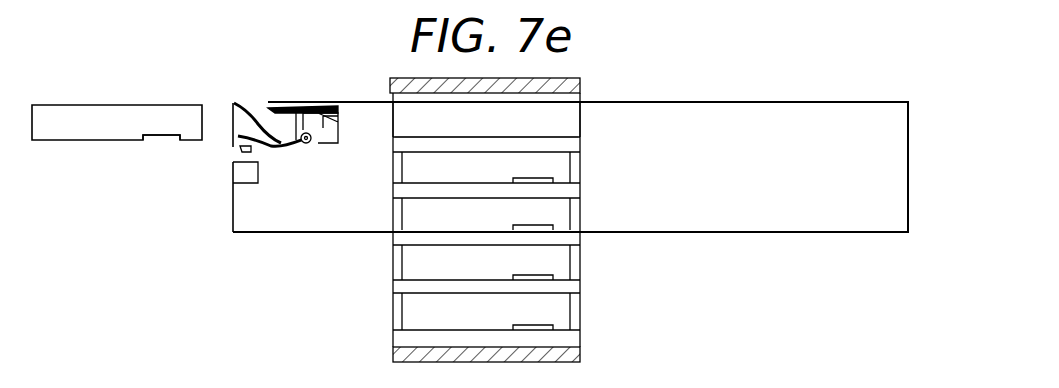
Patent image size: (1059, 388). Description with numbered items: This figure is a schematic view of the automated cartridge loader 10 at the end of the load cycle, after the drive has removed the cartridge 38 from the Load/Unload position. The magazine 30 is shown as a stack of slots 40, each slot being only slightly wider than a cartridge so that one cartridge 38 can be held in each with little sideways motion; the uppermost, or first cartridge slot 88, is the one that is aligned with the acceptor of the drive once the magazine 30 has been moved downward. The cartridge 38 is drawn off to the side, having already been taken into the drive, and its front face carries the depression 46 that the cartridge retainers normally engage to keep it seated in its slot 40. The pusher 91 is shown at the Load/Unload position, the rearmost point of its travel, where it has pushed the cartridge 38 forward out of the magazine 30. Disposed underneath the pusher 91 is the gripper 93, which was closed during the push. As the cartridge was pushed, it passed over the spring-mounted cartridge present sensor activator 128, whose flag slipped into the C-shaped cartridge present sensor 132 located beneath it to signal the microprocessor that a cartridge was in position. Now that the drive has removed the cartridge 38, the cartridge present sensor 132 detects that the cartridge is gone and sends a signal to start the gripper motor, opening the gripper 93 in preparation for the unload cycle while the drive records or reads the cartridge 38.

The automated cartridge loader 10 is at (741, 102).
The magazine 30 is at (392, 78).
The cartridge 38 is at (110, 113).
The slots 40 is at (565, 118).
The depression 46 is at (154, 141).
The first cartridge slot 88 is at (567, 128).
The pusher 91 is at (268, 100).
The gripper 93 is at (236, 103).
The cartridge present sensor activator 128 is at (264, 150).
The cartridge present sensor 132 is at (254, 176).